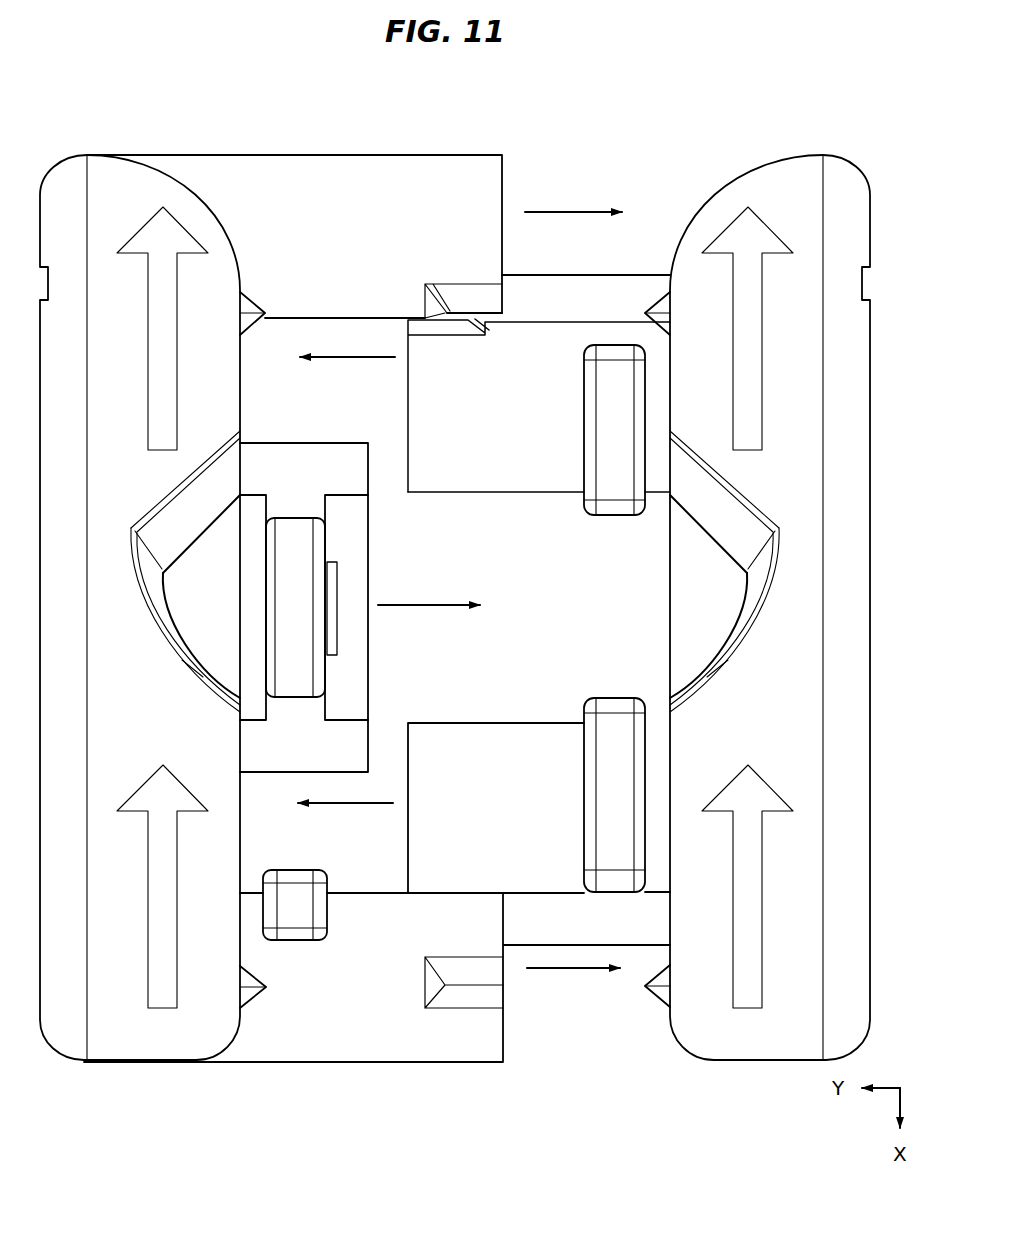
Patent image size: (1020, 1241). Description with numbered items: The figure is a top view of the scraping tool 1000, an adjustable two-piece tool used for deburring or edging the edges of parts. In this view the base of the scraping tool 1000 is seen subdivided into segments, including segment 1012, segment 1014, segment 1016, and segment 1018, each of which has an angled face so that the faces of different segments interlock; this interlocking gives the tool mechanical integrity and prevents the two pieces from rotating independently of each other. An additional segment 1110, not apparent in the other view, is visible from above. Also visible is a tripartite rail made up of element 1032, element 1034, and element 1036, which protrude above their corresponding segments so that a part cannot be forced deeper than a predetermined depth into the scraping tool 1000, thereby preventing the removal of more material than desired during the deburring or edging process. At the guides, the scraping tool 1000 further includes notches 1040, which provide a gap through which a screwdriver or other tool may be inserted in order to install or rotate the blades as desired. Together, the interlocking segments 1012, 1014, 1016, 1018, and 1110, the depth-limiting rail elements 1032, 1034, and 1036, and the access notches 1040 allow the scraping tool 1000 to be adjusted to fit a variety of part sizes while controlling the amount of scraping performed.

The scraping tool 1000 is at (678, 90).
The segment 1012 is at (503, 183).
The segment 1014 is at (408, 385).
The segment 1016 is at (368, 558).
The segment 1018 is at (377, 966).
The element 1032 is at (583, 449).
The element 1034 is at (305, 539).
The element 1036 is at (584, 820).
The notches 1040 is at (186, 660).
The segment 1110 is at (408, 840).